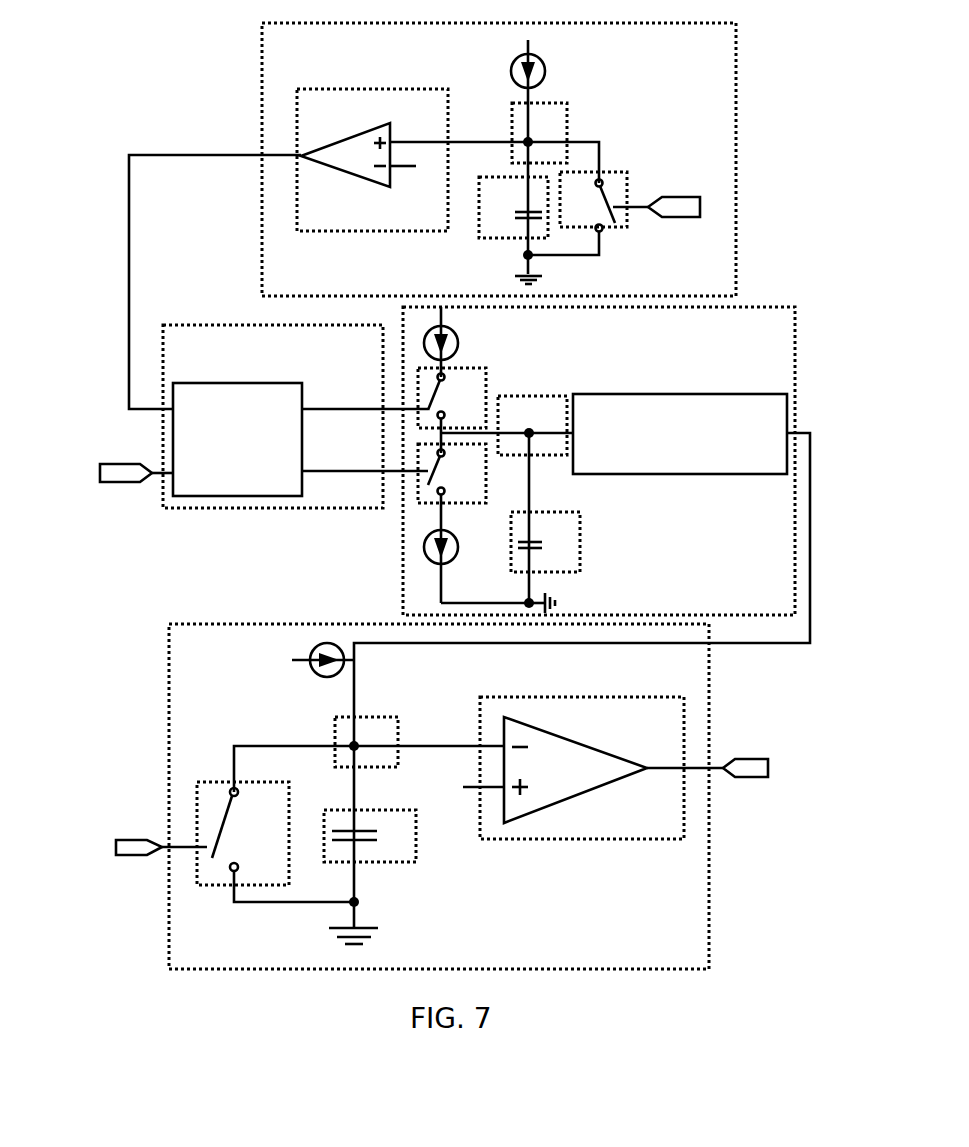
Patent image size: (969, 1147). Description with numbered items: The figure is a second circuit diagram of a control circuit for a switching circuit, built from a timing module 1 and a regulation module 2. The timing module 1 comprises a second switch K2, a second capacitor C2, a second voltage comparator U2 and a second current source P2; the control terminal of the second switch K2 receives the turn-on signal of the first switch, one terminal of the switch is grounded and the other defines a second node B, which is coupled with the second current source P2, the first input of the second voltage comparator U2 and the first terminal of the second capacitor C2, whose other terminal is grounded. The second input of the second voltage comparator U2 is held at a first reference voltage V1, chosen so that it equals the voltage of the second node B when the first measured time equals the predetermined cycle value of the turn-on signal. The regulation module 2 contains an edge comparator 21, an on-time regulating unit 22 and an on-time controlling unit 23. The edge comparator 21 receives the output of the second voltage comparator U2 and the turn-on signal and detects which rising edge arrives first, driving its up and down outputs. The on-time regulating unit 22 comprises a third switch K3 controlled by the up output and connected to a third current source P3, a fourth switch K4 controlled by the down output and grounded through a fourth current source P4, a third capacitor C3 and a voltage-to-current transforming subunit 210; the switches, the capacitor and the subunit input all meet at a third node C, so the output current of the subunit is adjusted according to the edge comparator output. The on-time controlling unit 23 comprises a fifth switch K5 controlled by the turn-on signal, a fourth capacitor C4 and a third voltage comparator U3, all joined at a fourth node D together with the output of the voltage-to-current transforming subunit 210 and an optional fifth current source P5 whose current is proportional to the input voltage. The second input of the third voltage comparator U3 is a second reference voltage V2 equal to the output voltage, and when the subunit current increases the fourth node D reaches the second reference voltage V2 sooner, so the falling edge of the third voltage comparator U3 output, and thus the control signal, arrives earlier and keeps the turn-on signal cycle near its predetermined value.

The timing module 1 is at (260, 107).
The regulation module 2 is at (305, 527).
The edge comparator 21 is at (365, 507).
The on-time regulating unit 22 is at (402, 555).
The on-time controlling unit 23 is at (357, 624).
The voltage-to-current transforming subunit 210 is at (677, 392).
The second voltage comparator U2 is at (318, 89).
The third voltage comparator U3 is at (592, 697).
The first reference voltage V1 is at (416, 166).
The second reference voltage V2 is at (468, 788).
The second current source P2 is at (543, 147).
The third current source P3 is at (457, 342).
The fourth current source P4 is at (457, 548).
The fifth current source P5 is at (310, 660).
The second switch K2 is at (593, 202).
The third switch K3 is at (452, 398).
The fourth switch K4 is at (452, 473).
The fifth switch K5 is at (243, 833).
The second capacitor C2 is at (513, 207).
The third capacitor C3 is at (545, 542).
The fourth capacitor C4 is at (370, 836).
The second node B is at (539, 133).
The third node C is at (532, 425).
The fourth node D is at (366, 742).